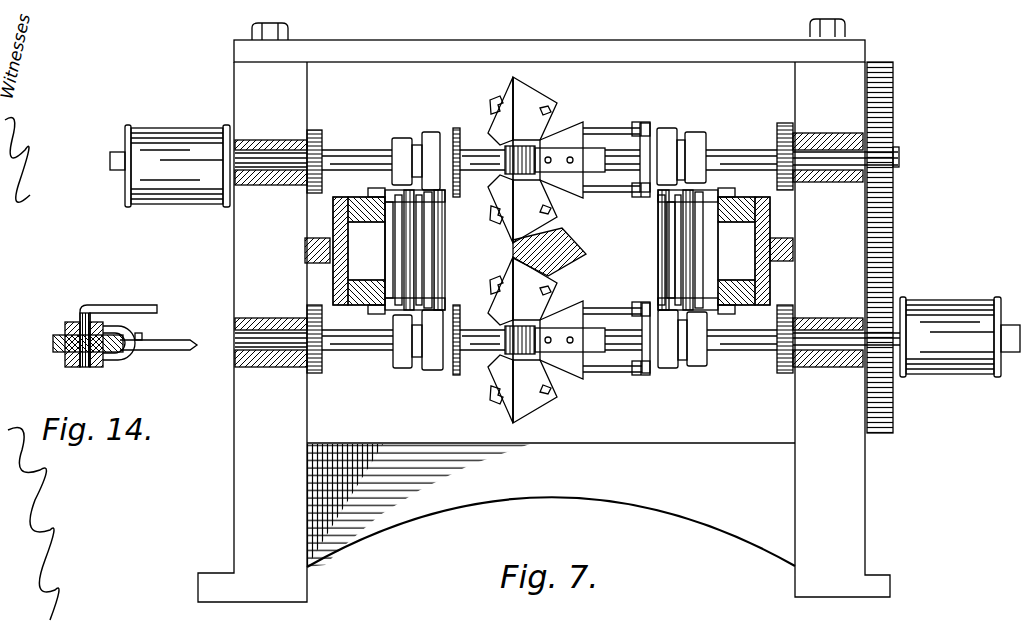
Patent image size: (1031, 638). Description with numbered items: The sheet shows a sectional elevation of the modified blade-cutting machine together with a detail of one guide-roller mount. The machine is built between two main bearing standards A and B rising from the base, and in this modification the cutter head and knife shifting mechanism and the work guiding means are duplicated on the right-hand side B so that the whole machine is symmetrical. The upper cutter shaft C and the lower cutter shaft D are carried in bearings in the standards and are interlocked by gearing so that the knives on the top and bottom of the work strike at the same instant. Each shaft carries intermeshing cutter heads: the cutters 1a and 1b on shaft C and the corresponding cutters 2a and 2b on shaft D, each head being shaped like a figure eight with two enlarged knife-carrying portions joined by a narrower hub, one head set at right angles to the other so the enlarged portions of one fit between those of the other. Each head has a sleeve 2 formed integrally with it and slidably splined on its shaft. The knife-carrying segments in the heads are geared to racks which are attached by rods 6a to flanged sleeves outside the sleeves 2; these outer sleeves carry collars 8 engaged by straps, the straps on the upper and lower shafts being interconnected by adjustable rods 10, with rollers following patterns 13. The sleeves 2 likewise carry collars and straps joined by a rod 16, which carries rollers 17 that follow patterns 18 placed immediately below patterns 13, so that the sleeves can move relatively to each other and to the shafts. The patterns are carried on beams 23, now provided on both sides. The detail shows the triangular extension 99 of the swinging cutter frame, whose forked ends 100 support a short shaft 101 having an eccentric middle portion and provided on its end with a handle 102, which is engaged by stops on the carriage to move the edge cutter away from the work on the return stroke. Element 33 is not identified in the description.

In FIG. 7, the cutter 1a is at (548, 118).
In FIG. 7, the cutter 1b is at (583, 122).
In FIG. 7, the sleeve 2 is at (473, 140).
In FIG. 7, the cutter 2a is at (522, 383).
In FIG. 7, the cutter 2b is at (577, 372).
In FIG. 7, the rod 6a is at (615, 122).
In FIG. 7, the collar 8 is at (428, 135).
In FIG. 7, the adjustable rod 10 is at (425, 266).
In FIG. 7, the pattern 13 is at (362, 197).
In FIG. 7, the rod 16 is at (413, 233).
In FIG. 7, the roller 17 is at (413, 285).
In FIG. 7, the pattern 18 is at (335, 215).
In FIG. 7, the beam 23 is at (551, 251).
In FIG. 7, the wedge 33 is at (552, 255).
In FIG. 7, the main bearing standard A is at (252, 332).
In FIG. 7, the main bearing standard B is at (842, 329).
In FIG. 7, the cutter shaft C is at (735, 147).
In FIG. 7, the cutter shaft D is at (380, 351).
In FIG. 14, the triangular frame extension 99 is at (175, 336).
In FIG. 14, the forked ends 100 is at (120, 360).
In FIG. 14, the short shaft 101 is at (88, 368).
In FIG. 14, the handle 102 is at (86, 316).